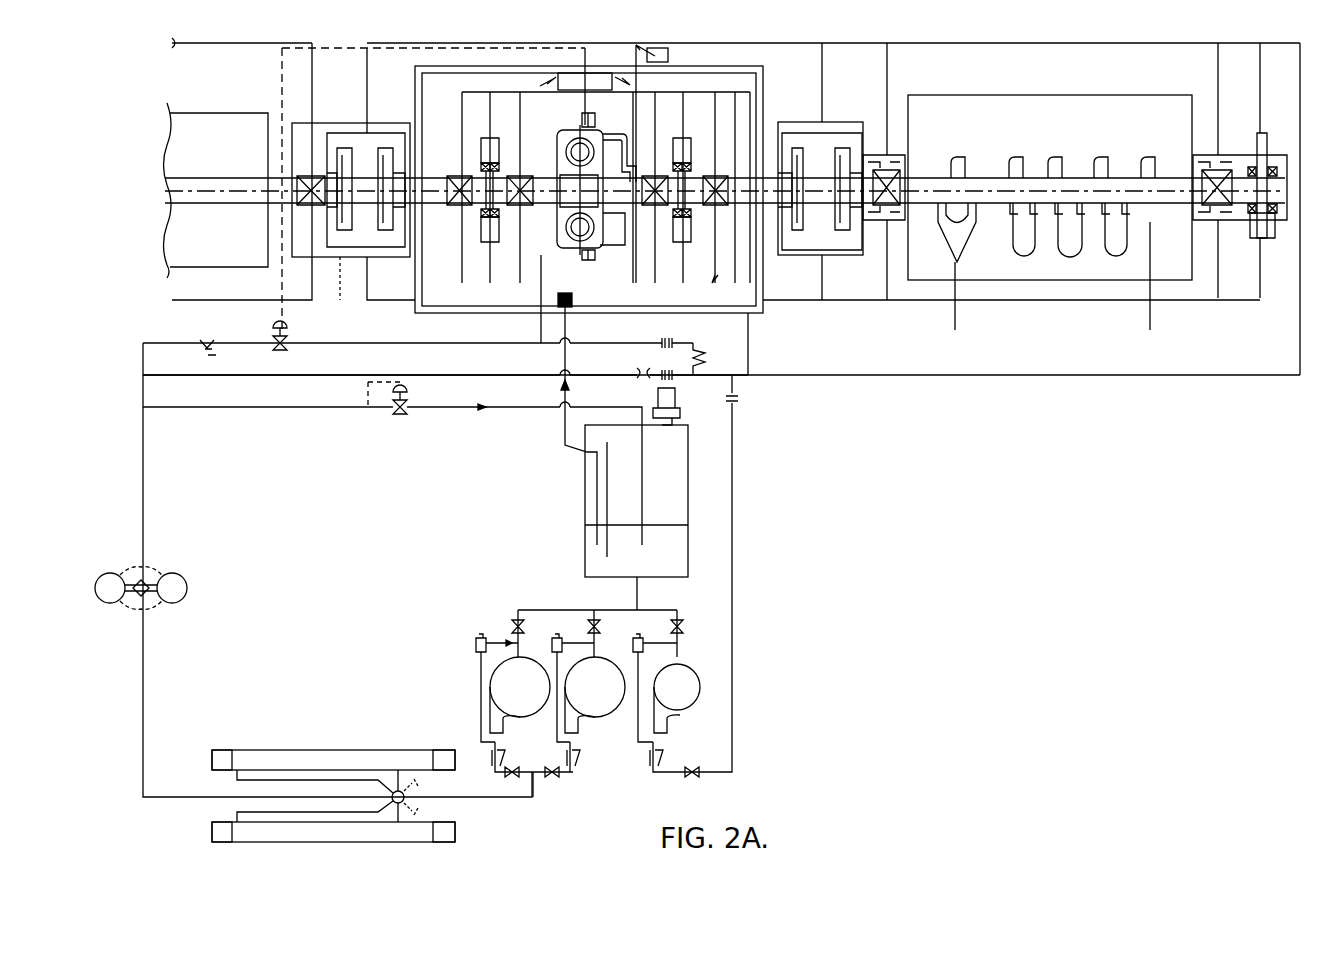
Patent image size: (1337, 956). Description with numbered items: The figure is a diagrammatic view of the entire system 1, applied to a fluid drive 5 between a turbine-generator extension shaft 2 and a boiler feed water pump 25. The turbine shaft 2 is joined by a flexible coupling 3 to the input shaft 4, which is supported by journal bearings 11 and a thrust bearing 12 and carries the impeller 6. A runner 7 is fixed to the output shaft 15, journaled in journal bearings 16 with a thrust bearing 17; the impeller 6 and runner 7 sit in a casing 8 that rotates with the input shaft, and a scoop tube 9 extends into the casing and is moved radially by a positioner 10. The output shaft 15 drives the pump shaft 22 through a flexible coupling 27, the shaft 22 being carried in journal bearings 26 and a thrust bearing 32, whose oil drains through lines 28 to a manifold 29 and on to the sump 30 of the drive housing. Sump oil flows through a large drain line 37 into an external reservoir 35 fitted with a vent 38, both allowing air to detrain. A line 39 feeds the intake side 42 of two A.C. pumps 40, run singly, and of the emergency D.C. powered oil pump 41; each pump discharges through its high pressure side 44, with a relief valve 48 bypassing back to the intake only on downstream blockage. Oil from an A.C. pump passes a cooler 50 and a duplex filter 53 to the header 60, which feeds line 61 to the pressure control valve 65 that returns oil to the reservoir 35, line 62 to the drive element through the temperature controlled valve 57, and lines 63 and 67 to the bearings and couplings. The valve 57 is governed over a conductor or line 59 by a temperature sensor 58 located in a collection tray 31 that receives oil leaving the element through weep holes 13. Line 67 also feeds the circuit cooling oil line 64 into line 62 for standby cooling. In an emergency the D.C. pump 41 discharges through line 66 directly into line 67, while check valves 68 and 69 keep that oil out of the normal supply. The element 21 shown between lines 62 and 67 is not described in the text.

The system 1 is at (118, 714).
The turbine-generator extension shaft 2 is at (222, 178).
The flexible coupling 3 is at (356, 172).
The input shaft 4 is at (428, 178).
The fluid drive 5 is at (575, 140).
The impeller 6 is at (562, 250).
The runner 7 is at (582, 258).
The casing 8 is at (595, 118).
The scoop tube 9 is at (636, 150).
The positioner 10 is at (668, 55).
The journal bearings 11 is at (456, 168).
The thrust bearing 12 is at (490, 190).
The weep holes 13 is at (580, 128).
The output shaft 15 is at (735, 176).
The journal bearings 16 is at (654, 177).
The thrust bearing 17 is at (682, 190).
The flexible connection 21 is at (704, 359).
The shaft of the boiler feed water pump 22 is at (978, 162).
The boiler feed water pump 25 is at (1058, 92).
The journal bearings 26 is at (1222, 152).
The flexible coupling 27 is at (816, 175).
The lines 28 is at (824, 278).
The manifold 29 is at (1028, 298).
The sump 30 is at (614, 288).
The collection tray 31 is at (585, 82).
The thrust bearing 32 is at (1262, 185).
The external reservoir 35 is at (624, 426).
The drain line 37 is at (565, 430).
The vent 38 is at (680, 400).
The line 39 is at (640, 596).
The A.C. pumps 40 is at (490, 663).
The D.C. powered oil pump 41 is at (694, 670).
The intake side 42 is at (520, 640).
The high pressure side 44 is at (508, 748).
The relief valve 48 is at (476, 643).
The cooler 50 is at (378, 750).
The duplex filter 53 is at (141, 594).
The temperature controlled valve 57 is at (287, 336).
The temperature sensor 58 is at (590, 50).
The conductor or line 59 is at (322, 43).
The header 60 is at (143, 428).
The line 61 is at (292, 407).
The line 62 is at (162, 343).
The line 63 is at (294, 375).
The circuit cooling oil line 64 is at (688, 343).
The pressure control valve 65 is at (408, 406).
The line 66 is at (735, 633).
The line 67 is at (990, 370).
The check valve 68 is at (635, 372).
The check valve 69 is at (218, 341).